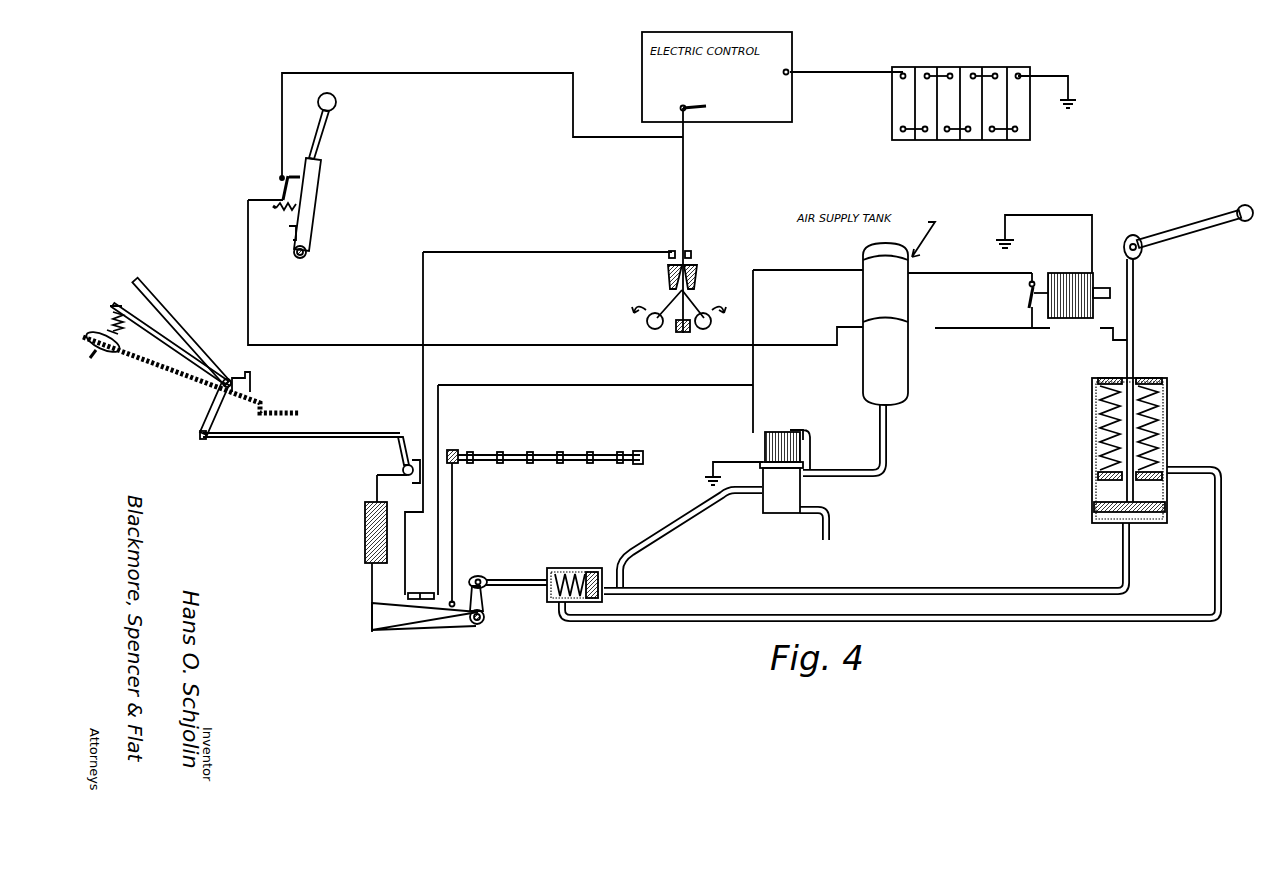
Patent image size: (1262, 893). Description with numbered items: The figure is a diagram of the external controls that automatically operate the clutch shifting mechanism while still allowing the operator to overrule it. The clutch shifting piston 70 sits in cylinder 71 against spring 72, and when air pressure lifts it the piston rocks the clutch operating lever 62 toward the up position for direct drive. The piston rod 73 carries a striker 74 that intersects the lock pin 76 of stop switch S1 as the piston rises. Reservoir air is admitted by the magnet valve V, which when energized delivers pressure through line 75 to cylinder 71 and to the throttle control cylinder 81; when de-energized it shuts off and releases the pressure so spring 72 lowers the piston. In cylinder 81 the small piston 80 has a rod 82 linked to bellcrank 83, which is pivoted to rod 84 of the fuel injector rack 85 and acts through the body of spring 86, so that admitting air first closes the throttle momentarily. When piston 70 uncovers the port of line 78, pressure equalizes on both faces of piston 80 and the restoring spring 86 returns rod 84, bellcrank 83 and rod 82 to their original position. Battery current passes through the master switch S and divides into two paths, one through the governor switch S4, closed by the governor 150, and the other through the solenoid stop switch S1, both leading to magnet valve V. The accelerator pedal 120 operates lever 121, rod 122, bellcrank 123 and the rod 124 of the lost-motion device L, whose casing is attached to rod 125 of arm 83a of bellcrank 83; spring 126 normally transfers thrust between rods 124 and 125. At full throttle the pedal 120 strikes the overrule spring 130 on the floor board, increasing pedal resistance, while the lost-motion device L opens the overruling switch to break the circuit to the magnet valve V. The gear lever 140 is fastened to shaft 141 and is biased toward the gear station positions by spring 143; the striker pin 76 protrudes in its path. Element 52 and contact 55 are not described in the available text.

The gear lever 140 is at (325, 137).
The spring 143 is at (297, 205).
The shaft 141 is at (310, 250).
The switch 52 is at (283, 187).
The overrule spring 130 is at (108, 325).
The accelerator pedal 120 is at (175, 320).
The lever 121 is at (212, 403).
The rod 122 is at (310, 440).
The bellcrank 123 is at (400, 468).
The rod 124 is at (377, 490).
The spring 126 is at (365, 549).
The lost-motion device L is at (365, 518).
The rod 125 is at (372, 585).
The contact 55 is at (421, 593).
The arm 83a is at (408, 630).
The bellcrank 83 is at (484, 597).
The rod 82 is at (515, 580).
The spring 86 is at (553, 568).
The cylinder 81 is at (570, 572).
The small piston 80 is at (597, 568).
The rod 84 is at (454, 487).
The fuel injector rack 85 is at (484, 455).
The air line 75 is at (897, 592).
The line 78 is at (1188, 470).
The clutch shifting piston 70 is at (1092, 509).
The cylinder 71 is at (1092, 442).
The spring 72 is at (1158, 392).
The piston rod 73 is at (1135, 358).
The striker 74 is at (1113, 340).
The lock pin 76 is at (1090, 285).
The clutch operating lever 62 is at (1203, 222).
The governor 150 is at (712, 309).
The stop switch S1 is at (1028, 293).
The governor switch S4 is at (691, 255).
The master switch S is at (700, 108).
The magnet valve V is at (785, 471).